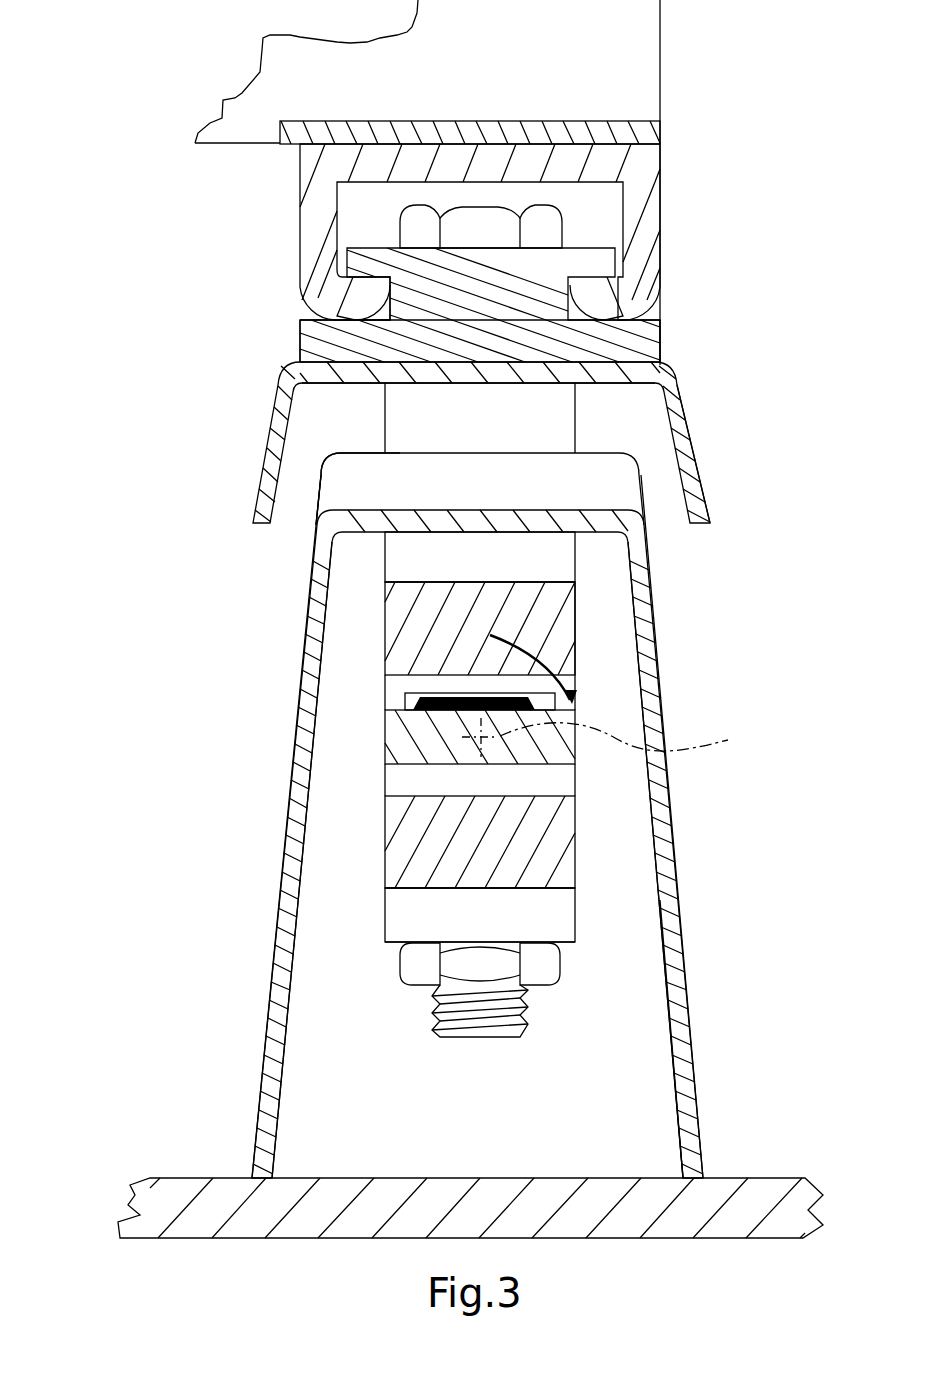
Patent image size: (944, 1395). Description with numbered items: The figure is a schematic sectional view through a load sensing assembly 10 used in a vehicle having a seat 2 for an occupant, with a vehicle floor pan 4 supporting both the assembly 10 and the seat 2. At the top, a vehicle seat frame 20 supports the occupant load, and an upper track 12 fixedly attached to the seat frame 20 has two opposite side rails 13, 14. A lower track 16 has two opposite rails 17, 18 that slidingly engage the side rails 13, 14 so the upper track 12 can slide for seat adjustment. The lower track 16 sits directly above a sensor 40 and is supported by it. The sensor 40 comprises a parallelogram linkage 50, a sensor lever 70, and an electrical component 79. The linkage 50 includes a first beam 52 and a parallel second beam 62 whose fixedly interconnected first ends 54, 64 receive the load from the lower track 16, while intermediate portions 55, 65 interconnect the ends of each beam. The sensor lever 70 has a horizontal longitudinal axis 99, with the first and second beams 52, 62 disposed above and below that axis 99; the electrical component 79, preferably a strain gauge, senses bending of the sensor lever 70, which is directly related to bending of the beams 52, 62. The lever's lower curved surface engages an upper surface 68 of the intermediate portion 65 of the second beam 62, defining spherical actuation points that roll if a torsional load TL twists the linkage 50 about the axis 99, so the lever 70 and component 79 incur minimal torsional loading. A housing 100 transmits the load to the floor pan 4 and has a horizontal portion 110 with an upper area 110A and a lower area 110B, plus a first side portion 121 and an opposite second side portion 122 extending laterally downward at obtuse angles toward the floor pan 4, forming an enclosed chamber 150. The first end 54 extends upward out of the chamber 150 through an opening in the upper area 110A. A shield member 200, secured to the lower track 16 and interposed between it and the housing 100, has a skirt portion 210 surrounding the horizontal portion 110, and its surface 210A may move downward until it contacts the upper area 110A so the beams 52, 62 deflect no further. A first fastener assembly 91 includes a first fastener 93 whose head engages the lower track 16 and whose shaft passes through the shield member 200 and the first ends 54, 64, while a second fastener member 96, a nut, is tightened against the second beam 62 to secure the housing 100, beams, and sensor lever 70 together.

The seat 2 is at (575, 63).
The vehicle seat frame 20 is at (640, 134).
The upper track 12 is at (663, 203).
The load sensing assembly 10 is at (415, 232).
The side rail 13 is at (320, 235).
The first fastener 93 is at (388, 219).
The side rail 14 is at (643, 253).
The lower track 16 is at (668, 342).
The rail 17 is at (320, 343).
The rail 18 is at (653, 322).
The shield member 200 is at (702, 400).
The surface 210A is at (350, 384).
The skirt portion 210 is at (703, 502).
The horizontal portion 110 is at (553, 522).
The upper area 110A is at (373, 452).
The lower area 110B is at (373, 506).
The sensor 40 is at (609, 583).
The housing 100 is at (692, 875).
The first side portion 121 is at (687, 968).
The second side portion 122 is at (283, 967).
The enclosed chamber 150 is at (633, 1113).
The first end 54 is at (410, 558).
The first beam 52 is at (371, 627).
The intermediate portion 55 is at (400, 591).
The parallelogram linkage 50 is at (605, 636).
The electrical component 79 is at (460, 700).
The sensor lever 70 is at (371, 733).
The longitudinal axis 99 is at (610, 737).
The torsional load TL is at (553, 663).
The second beam 62 is at (368, 835).
The intermediate portion 65 is at (407, 863).
The first end 64 is at (410, 915).
The upper surface 68 is at (392, 945).
The second fastener member 96 is at (567, 967).
The first fastener assembly 91 is at (532, 1045).
The vehicle floor pan 4 is at (735, 1220).